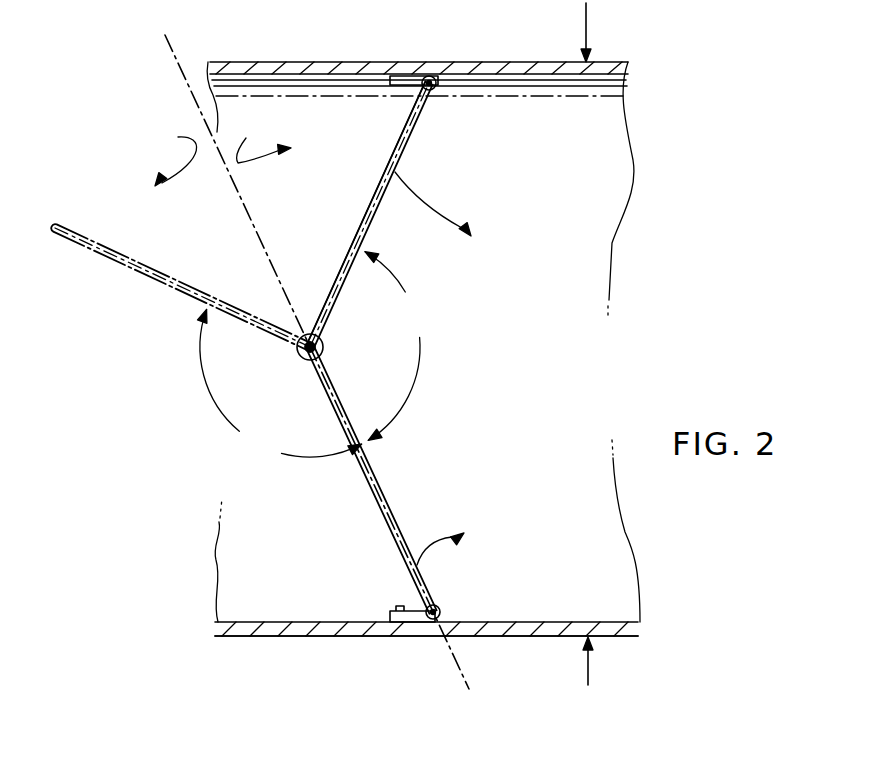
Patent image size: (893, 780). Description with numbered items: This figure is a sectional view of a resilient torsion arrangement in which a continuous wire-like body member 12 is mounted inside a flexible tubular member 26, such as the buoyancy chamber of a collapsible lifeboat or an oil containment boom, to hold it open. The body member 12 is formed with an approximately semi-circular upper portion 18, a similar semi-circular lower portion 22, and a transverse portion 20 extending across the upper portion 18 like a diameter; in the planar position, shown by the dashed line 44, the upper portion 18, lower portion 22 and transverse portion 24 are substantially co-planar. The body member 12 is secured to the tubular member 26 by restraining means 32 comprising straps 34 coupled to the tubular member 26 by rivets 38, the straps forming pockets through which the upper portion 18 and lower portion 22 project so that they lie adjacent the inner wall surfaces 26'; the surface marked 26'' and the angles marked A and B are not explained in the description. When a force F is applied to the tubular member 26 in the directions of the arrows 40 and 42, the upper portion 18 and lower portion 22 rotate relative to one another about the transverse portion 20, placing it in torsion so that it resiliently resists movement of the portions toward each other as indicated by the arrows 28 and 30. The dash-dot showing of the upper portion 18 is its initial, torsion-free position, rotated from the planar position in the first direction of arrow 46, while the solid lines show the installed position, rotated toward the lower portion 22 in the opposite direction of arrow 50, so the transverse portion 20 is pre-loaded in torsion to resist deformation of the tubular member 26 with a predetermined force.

The wire-like body member 12 is at (366, 183).
The upper portion 18 is at (407, 149).
The transverse portion 20 is at (323, 343).
The lower portion 22 is at (380, 466).
The transverse portion 24 is at (315, 333).
The flexible tubular member 26 is at (453, 171).
The inner wall surfaces 26' is at (427, 538).
The lower panel outer surface 26'' is at (465, 649).
The arrow 28 is at (452, 206).
The arrow 30 is at (440, 528).
The restraining means 32 is at (440, 76).
The straps 34 is at (440, 92).
The rivets 38 is at (400, 62).
The arrow 40 is at (583, 30).
The arrow 42 is at (580, 666).
The dashed line 44 is at (166, 40).
The arrow 46 is at (162, 150).
The arrow 50 is at (261, 135).
The angle A is at (280, 389).
The angle B is at (400, 346).